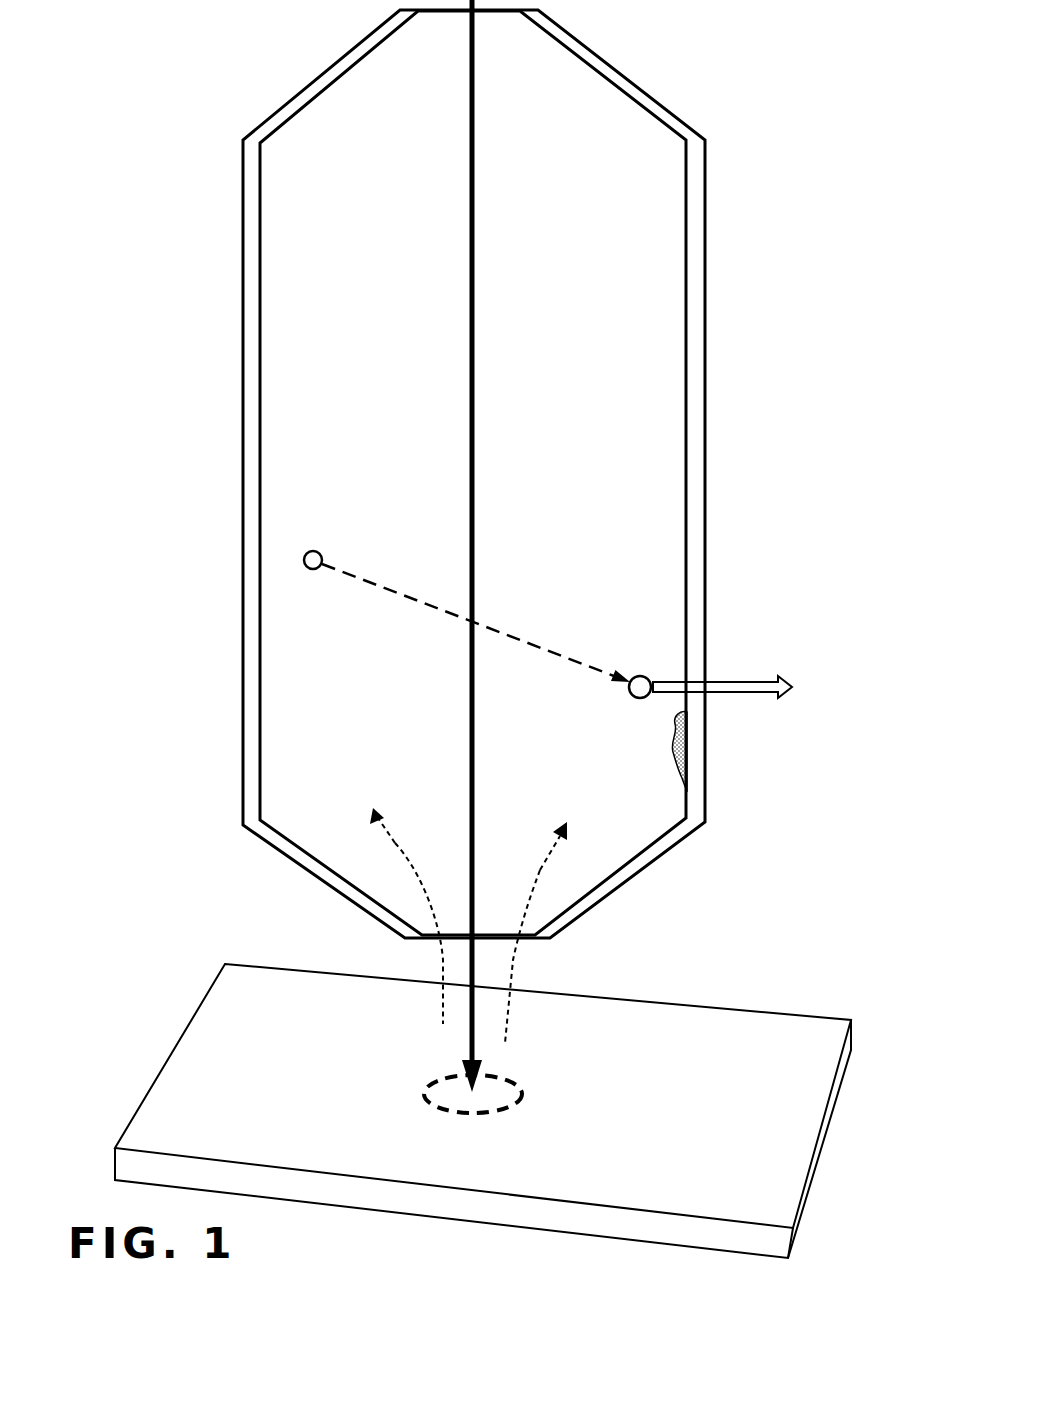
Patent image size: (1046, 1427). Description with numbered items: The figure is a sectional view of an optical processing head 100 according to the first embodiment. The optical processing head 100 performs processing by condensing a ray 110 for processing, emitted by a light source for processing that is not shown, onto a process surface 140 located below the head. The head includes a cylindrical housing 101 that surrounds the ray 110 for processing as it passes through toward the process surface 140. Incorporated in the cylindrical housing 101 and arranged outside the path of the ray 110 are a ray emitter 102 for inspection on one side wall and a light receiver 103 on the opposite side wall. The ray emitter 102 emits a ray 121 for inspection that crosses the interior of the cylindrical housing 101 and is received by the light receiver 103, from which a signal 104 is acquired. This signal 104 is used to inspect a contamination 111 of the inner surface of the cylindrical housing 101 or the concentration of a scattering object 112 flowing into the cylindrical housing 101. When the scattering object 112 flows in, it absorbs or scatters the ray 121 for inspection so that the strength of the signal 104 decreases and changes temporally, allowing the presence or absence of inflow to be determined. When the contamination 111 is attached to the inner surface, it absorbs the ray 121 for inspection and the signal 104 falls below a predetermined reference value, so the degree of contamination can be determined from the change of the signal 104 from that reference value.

The optical processing head 100 is at (186, 246).
The cylindrical housing 101 is at (699, 288).
The ray emitter for inspection 102 is at (310, 556).
The light receiver 103 is at (645, 683).
The signal 104 is at (754, 692).
The ray for processing 110 is at (471, 130).
The contamination 111 is at (675, 740).
The scattering object 112 is at (540, 870).
The ray for inspection 121 is at (527, 643).
The process surface 140 is at (222, 1033).